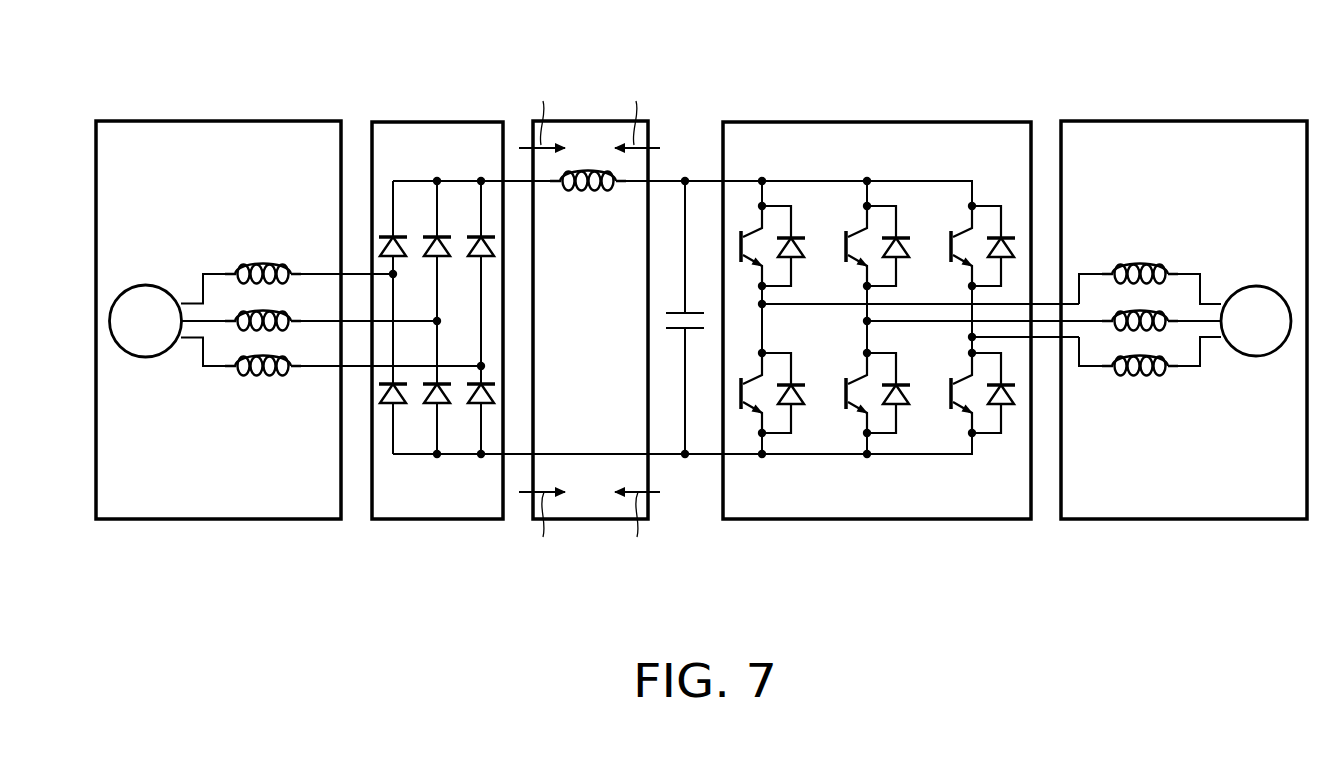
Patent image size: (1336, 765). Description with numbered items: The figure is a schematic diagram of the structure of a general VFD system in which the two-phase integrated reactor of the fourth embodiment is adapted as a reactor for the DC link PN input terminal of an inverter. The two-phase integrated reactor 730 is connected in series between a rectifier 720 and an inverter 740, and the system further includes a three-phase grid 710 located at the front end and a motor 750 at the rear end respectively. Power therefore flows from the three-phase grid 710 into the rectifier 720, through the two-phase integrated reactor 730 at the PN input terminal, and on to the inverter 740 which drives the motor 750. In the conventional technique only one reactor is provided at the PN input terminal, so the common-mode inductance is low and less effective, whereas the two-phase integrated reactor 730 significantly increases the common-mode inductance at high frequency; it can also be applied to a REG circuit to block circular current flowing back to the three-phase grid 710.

The three-phase grid 710 is at (217, 121).
The rectifier 720 is at (436, 122).
The two-phase integrated reactor 730 is at (589, 121).
The inverter 740 is at (876, 122).
The motor 750 is at (1183, 121).